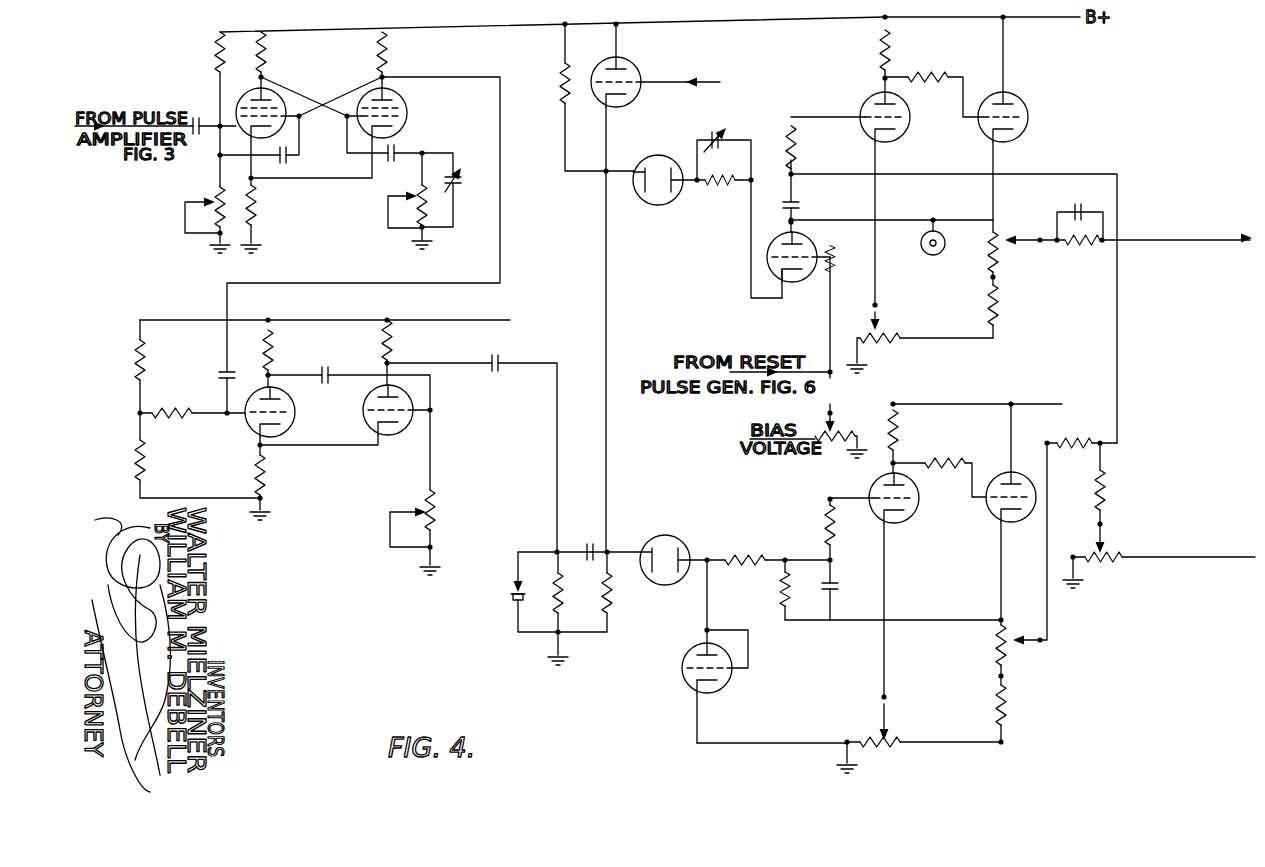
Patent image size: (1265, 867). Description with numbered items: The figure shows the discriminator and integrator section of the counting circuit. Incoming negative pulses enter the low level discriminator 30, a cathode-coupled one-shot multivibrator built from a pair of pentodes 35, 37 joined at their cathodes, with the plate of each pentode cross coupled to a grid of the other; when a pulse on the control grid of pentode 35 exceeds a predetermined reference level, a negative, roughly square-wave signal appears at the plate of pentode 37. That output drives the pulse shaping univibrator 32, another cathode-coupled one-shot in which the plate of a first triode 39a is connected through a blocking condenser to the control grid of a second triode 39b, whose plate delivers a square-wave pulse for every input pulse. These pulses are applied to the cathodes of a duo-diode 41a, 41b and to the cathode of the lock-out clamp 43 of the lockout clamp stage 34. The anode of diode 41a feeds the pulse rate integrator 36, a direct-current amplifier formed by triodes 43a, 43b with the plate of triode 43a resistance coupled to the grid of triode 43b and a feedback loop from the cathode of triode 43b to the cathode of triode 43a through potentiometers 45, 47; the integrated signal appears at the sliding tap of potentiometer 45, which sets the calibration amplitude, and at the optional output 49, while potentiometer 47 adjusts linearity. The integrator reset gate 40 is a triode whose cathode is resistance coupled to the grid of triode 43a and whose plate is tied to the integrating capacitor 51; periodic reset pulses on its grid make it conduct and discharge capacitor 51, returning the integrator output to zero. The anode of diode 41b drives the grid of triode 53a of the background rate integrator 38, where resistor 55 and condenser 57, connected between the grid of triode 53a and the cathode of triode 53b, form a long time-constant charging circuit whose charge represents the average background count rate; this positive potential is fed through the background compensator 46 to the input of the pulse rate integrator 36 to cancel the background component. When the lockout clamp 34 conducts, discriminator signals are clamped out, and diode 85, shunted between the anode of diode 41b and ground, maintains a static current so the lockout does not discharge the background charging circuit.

The low level discriminator 30 is at (334, 83).
The pentode 35 is at (248, 100).
The pentode 37 is at (409, 99).
The lockout clamp 34 is at (657, 57).
The lock-out clamp 43 is at (620, 107).
The diode 41a is at (657, 206).
The integrating capacitor 51 is at (800, 204).
The integrator reset gate 40 is at (812, 247).
The pulse rate integrator 36 is at (949, 65).
The triode 43a is at (903, 134).
The triode 43b is at (1028, 127).
The potentiometer 45 is at (999, 228).
The optional output 49 is at (932, 256).
The potentiometer 47 is at (897, 338).
The pulse shaping univibrator 32 is at (338, 360).
The first triode 39a is at (248, 424).
The second triode 39b is at (363, 399).
The diode 41b is at (661, 535).
The resistor 55 is at (782, 590).
The condenser 57 is at (837, 590).
The diode 85 is at (733, 690).
The background rate integrator 38 is at (955, 524).
The first triode 53a is at (903, 522).
The second triode 53b is at (1015, 521).
The background compensator 46 is at (1146, 500).